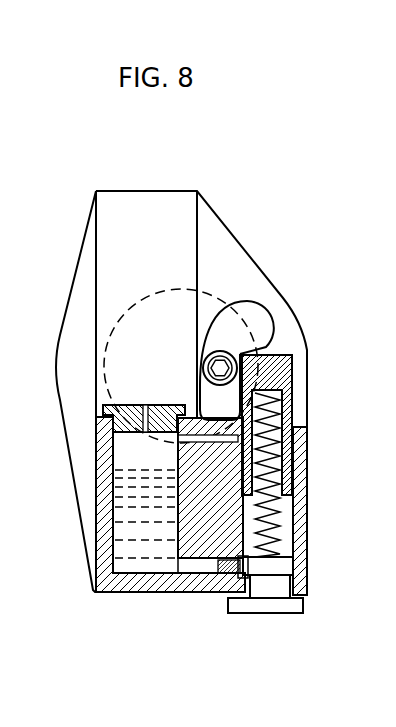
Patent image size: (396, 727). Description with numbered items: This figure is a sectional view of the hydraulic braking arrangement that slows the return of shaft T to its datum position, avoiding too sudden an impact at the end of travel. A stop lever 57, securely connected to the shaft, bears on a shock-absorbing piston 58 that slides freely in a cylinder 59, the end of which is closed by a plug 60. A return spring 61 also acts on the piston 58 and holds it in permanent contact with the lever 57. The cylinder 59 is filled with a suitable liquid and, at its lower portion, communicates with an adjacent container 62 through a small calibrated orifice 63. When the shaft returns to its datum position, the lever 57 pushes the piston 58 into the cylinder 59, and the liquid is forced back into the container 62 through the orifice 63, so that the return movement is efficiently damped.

The stop lever 57 is at (265, 322).
The shock-absorbing piston 58 is at (283, 373).
The cylinder 59 is at (305, 511).
The plug 60 is at (280, 605).
The return spring 61 is at (292, 455).
The container 62 is at (140, 550).
The calibrated orifice 63 is at (230, 578).